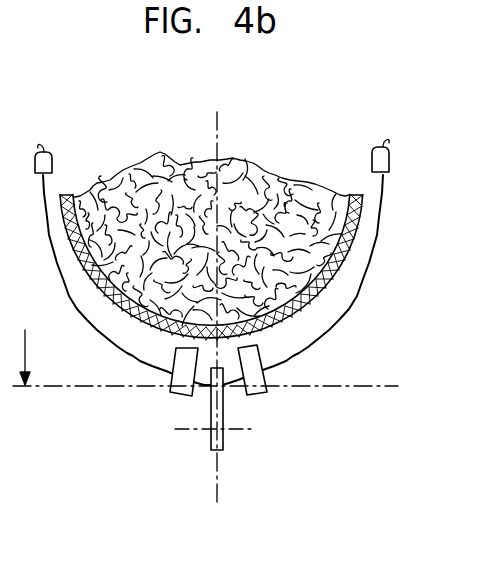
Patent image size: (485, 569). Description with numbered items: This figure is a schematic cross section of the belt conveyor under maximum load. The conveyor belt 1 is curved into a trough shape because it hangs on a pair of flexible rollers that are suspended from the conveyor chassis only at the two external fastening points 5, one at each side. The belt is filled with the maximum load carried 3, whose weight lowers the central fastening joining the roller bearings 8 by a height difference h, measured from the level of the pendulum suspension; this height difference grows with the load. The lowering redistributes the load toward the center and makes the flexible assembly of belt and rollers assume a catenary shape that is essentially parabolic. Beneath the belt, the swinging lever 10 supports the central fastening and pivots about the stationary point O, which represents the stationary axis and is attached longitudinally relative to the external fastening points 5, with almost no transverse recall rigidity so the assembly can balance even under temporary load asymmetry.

The conveyor belt 1 is at (342, 260).
The load 3 is at (280, 178).
The external fastening points 5 is at (53, 162).
The roller bearings 8 is at (172, 393).
The swinging lever 10 is at (223, 443).
The stationary point O is at (227, 429).
The height difference h is at (35, 357).